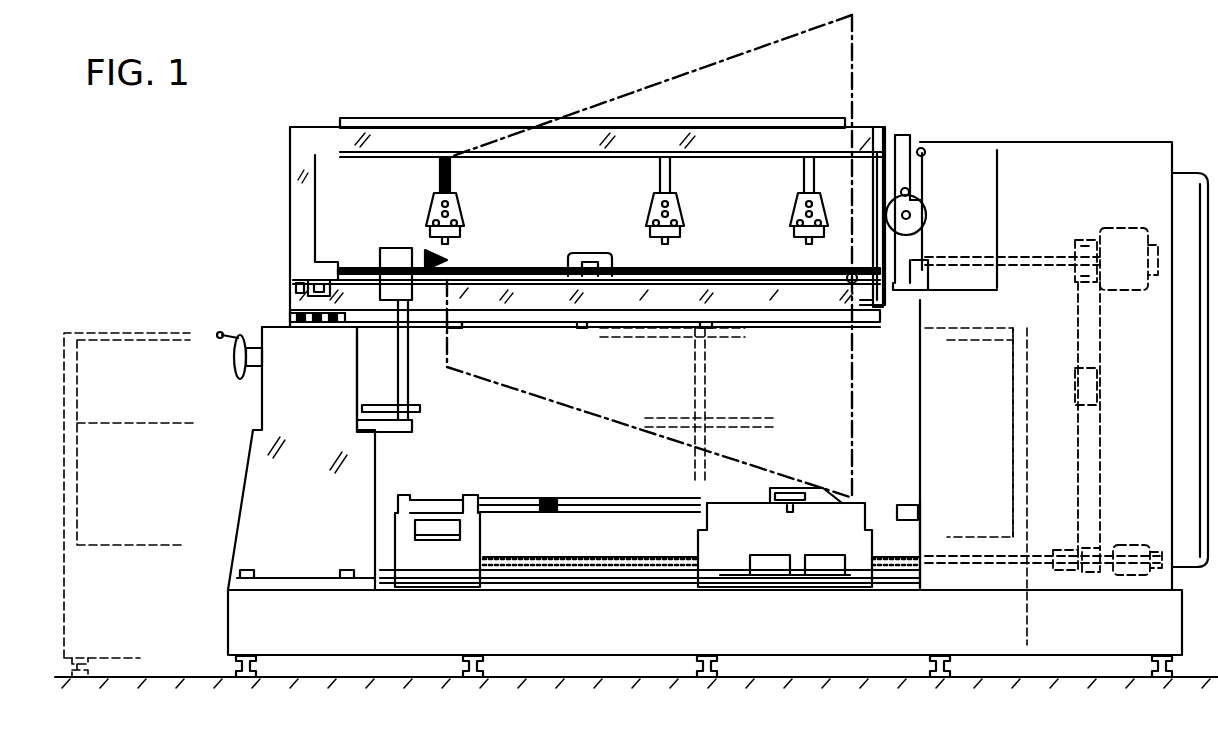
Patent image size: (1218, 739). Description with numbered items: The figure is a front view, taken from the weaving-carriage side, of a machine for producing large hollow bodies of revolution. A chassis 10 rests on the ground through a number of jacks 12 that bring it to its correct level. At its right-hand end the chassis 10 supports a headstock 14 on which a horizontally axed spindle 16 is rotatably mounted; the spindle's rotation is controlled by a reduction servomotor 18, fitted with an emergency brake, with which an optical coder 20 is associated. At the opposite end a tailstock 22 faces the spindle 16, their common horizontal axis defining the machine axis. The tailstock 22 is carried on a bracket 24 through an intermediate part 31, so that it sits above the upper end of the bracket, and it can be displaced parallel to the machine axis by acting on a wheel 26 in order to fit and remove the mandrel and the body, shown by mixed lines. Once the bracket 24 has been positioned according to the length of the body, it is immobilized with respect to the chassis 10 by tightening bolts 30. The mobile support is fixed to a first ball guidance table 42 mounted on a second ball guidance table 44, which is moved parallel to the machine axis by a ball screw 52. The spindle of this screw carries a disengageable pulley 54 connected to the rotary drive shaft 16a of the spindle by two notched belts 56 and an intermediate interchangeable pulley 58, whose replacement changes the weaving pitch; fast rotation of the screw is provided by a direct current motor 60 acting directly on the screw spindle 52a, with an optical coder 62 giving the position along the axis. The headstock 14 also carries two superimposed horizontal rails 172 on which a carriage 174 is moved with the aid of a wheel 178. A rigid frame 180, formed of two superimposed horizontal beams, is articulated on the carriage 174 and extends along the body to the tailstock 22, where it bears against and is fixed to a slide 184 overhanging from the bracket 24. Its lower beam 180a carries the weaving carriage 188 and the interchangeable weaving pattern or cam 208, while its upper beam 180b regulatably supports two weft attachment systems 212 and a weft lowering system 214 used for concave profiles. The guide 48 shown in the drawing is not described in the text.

The chassis 10 is at (235, 620).
The jacks 12 is at (258, 672).
The headstock 14 is at (1135, 145).
The spindle 16 is at (898, 300).
The rotary drive shaft 16a is at (1023, 268).
The reduction servomotor 18 is at (1110, 228).
The optical coder 20 is at (1152, 240).
The tailstock 22 is at (415, 250).
The bracket 24 is at (250, 445).
The wheel 26 is at (232, 360).
The bolts 30 is at (252, 572).
The intermediate part 31 is at (355, 385).
The first ball guidance table 42 is at (742, 510).
The second ball guidance table 44 is at (826, 548).
The guide rail 48 is at (600, 500).
The ball screw 52 is at (590, 565).
The screw spindle 52a is at (1060, 548).
The disengageable pulley 54 is at (1090, 578).
The notched belts 56 is at (1088, 328).
The intermediate interchangeable pulley 58 is at (1105, 383).
The direct current motor 60 is at (1145, 545).
The optical coder 62 is at (1153, 578).
The horizontal rails 172 is at (926, 152).
The carriage 174 is at (897, 190).
The wheel 178 is at (927, 215).
The rigid frame 180 is at (365, 118).
The lower beam 180a is at (765, 305).
The upper beam 180b is at (398, 135).
The slide 184 is at (285, 315).
The weaving carriage 188 is at (605, 283).
The weaving pattern or cam 208 is at (515, 320).
The weft attachment systems 212 is at (428, 212).
The weft lowering systems 214 is at (640, 218).